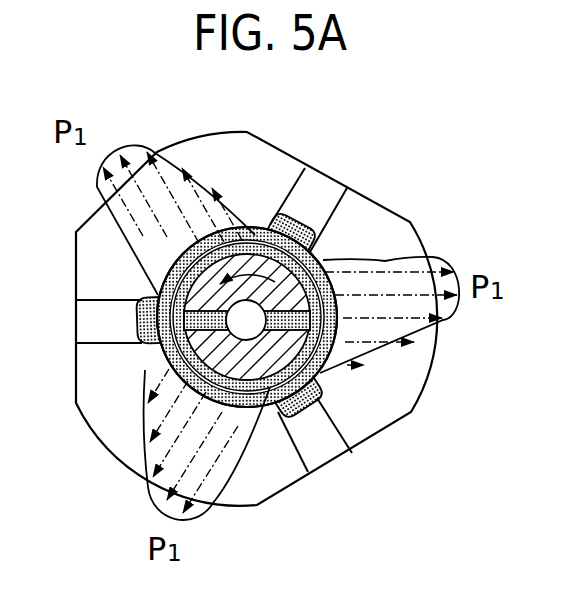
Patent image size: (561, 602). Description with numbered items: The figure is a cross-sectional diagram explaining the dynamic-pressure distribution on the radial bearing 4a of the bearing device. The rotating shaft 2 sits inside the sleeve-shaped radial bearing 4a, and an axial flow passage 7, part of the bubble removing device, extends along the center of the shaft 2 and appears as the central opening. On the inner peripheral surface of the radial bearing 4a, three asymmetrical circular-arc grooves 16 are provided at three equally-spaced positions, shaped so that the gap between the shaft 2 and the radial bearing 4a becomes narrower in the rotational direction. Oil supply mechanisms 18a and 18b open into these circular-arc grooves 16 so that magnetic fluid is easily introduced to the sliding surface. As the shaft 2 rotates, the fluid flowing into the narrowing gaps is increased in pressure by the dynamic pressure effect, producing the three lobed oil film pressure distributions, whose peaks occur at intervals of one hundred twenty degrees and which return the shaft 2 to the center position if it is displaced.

The rotating shaft 2 is at (146, 368).
The axial flow passage 7 is at (313, 232).
The radial bearing 4a is at (323, 255).
The asymmetrical circular-arc grooves 16 is at (337, 365).
The oil supply mechanism 18a is at (335, 418).
The oil supply mechanism 18b is at (322, 458).